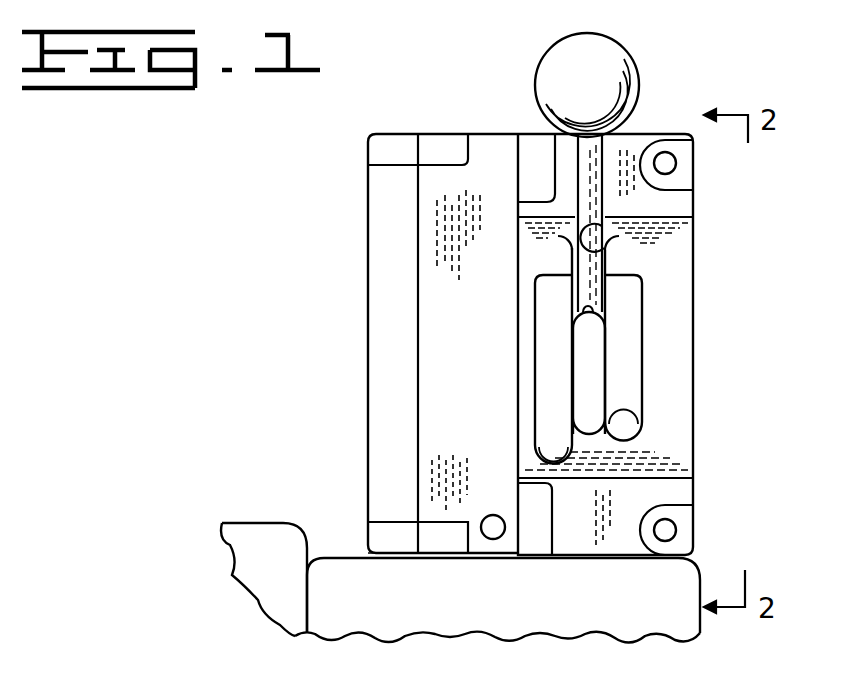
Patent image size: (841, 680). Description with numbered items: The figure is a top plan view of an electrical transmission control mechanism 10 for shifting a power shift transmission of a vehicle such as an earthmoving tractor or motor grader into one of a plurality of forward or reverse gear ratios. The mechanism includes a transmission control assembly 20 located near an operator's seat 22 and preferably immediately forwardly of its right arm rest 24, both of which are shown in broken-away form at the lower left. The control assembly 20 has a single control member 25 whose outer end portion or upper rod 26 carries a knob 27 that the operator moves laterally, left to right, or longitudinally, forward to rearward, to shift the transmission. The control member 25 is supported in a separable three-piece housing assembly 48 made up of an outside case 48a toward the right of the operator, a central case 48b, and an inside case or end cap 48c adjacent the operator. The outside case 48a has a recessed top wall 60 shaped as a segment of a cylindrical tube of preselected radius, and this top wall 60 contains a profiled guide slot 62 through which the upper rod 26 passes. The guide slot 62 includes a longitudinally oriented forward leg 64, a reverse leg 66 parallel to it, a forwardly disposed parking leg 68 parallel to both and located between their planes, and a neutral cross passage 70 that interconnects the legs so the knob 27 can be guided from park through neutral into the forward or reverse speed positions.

The electrical transmission control mechanism 10 is at (298, 228).
The transmission control assembly 20 is at (602, 368).
The operator's seat 22 is at (274, 512).
The right arm rest 24 is at (440, 628).
The control member 25 is at (557, 159).
The upper rod 26 is at (572, 148).
The knob 27 is at (600, 48).
The housing assembly 48 is at (360, 375).
The outside case 48a is at (622, 542).
The central case 48b is at (503, 544).
The inside case or end cap 48c is at (405, 540).
The recessed top wall 60 is at (680, 255).
The profiled guide slot 62 is at (548, 406).
The forward leg 64 is at (534, 288).
The reverse leg 66 is at (644, 343).
The parking leg 68 is at (602, 226).
The neutral cross passage 70 is at (585, 318).